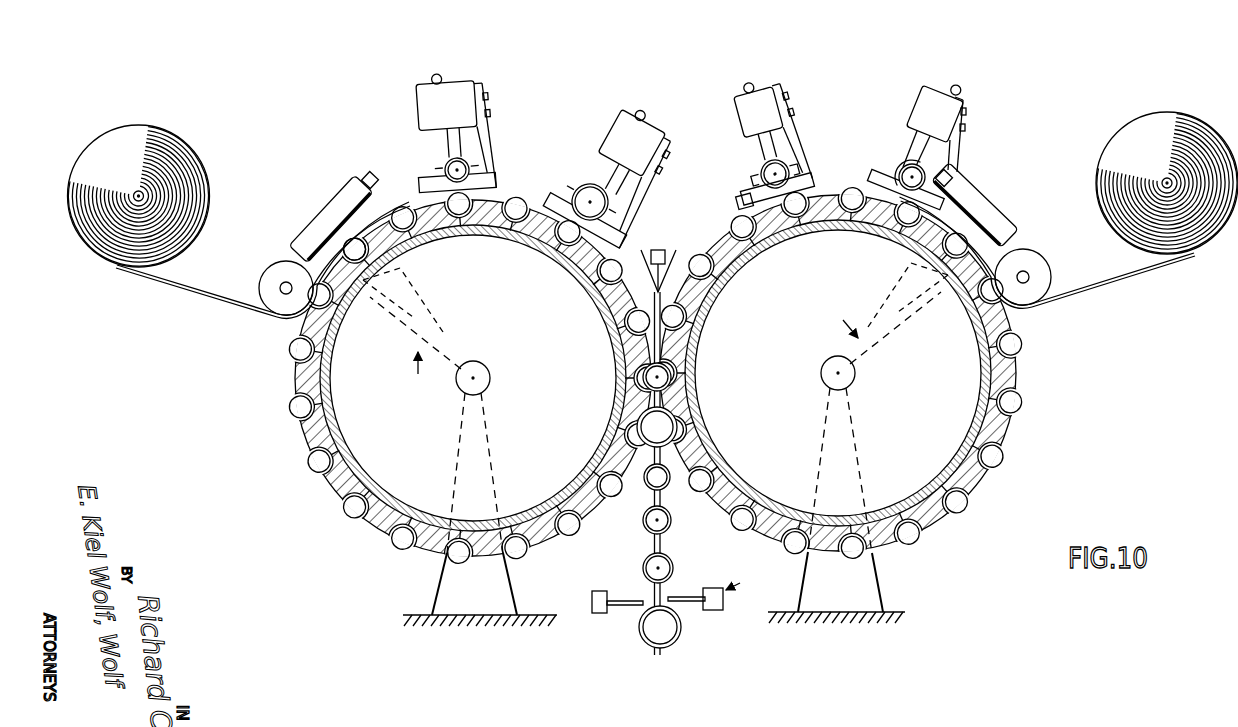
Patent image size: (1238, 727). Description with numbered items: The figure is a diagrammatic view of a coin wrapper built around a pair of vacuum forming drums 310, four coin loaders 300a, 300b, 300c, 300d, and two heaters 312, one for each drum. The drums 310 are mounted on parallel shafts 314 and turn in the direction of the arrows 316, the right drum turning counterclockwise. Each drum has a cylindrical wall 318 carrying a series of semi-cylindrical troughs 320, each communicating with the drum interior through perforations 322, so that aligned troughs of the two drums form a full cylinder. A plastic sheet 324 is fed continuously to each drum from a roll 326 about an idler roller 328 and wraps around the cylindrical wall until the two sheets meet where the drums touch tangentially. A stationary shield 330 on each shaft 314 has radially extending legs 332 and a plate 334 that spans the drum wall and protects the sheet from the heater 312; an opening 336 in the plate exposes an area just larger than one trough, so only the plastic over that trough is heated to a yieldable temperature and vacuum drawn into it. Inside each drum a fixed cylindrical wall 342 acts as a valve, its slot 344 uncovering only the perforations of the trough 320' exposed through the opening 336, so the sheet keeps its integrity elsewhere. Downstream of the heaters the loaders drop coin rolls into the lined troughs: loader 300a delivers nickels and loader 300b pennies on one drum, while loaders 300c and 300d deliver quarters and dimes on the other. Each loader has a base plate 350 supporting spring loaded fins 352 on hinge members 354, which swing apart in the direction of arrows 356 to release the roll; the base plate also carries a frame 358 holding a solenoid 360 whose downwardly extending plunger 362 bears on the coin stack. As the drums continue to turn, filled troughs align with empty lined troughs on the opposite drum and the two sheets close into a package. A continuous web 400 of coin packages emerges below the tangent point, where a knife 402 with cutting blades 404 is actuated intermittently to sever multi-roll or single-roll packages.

The coin loader 300a is at (780, 93).
The coin loader 300b is at (962, 99).
The coin loader 300c is at (630, 119).
The coin loader 300d is at (480, 83).
The vacuum forming drum 310 is at (604, 449).
The heater 312 is at (330, 203).
The shaft 314 is at (490, 376).
The arrow 316 is at (600, 306).
The cylindrical wall 318 is at (531, 541).
The trough 320 is at (670, 375).
The trough 320' is at (335, 198).
The perforation 322 is at (972, 349).
The plastic sheet 324 is at (240, 306).
The roll 326 is at (160, 126).
The idler roller 328 is at (274, 268).
The shield 330 is at (628, 356).
The leg 332 is at (438, 320).
The plate 334 is at (379, 214).
The opening 336 is at (369, 174).
The cylindrical wall 342 is at (521, 521).
The slot 344 is at (375, 302).
The base plate 350 is at (746, 189).
The fin 352 is at (808, 181).
The hinge member 354 is at (800, 166).
The arrow 356 is at (758, 177).
The frame 358 is at (800, 148).
The solenoid 360 is at (760, 90).
The plunger 362 is at (760, 151).
The continuous web 400 is at (673, 520).
The knife 402 is at (749, 578).
The cutting blade 404 is at (620, 600).